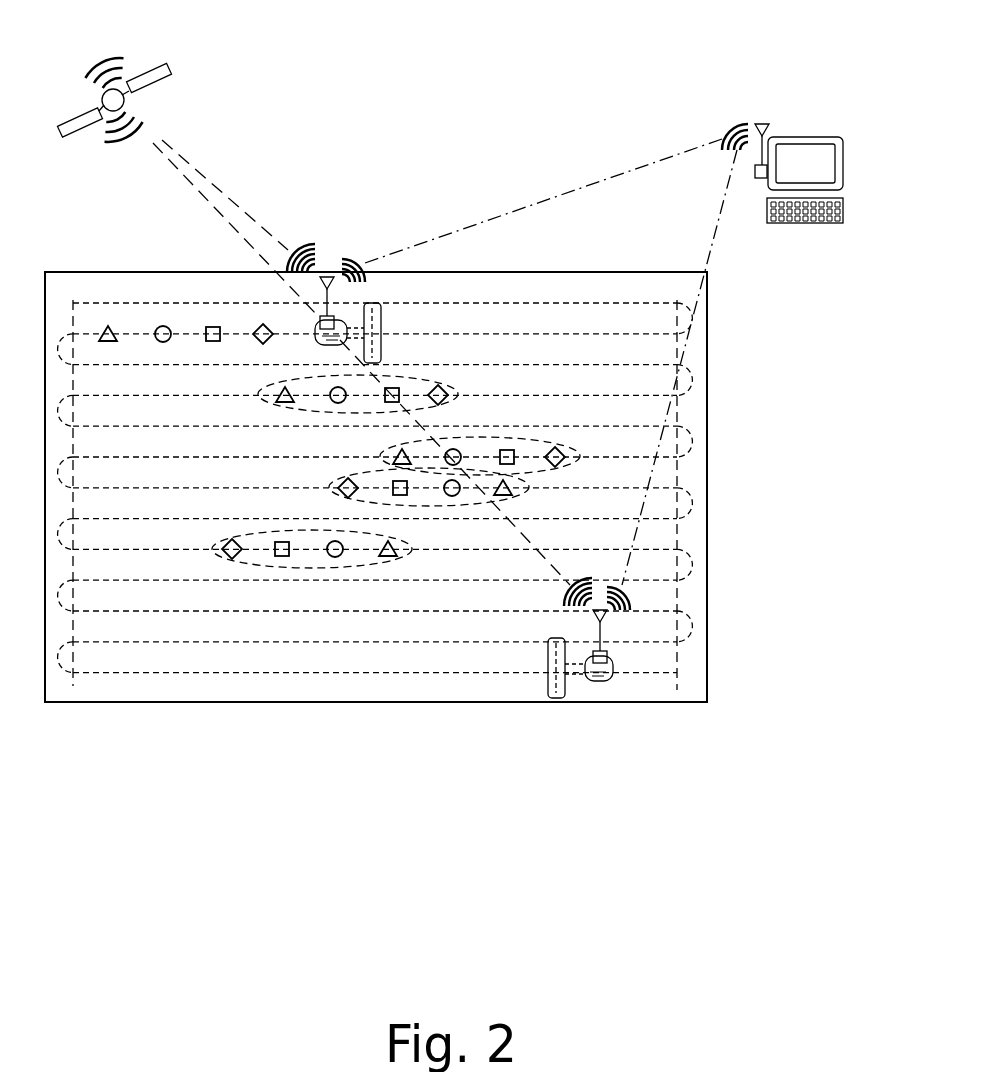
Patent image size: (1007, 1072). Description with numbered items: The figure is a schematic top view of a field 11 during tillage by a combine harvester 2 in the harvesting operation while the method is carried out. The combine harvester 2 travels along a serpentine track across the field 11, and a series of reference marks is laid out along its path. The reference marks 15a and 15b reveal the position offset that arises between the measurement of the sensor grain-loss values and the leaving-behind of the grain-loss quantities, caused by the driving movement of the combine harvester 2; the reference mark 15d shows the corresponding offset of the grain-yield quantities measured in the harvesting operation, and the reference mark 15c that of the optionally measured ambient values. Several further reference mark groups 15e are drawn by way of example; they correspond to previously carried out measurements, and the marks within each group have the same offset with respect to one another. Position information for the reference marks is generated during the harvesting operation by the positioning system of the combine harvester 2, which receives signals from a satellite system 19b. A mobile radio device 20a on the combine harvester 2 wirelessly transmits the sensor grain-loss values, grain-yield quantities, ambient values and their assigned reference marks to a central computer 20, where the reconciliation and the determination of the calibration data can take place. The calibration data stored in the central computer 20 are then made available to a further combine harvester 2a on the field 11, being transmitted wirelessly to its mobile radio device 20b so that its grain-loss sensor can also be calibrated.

The combine harvester 2 is at (377, 323).
The further combine harvester 2a is at (563, 700).
The field 11 is at (698, 347).
The reference mark 15a is at (163, 325).
The reference mark 15b is at (213, 325).
The reference mark 15c is at (263, 325).
The reference mark 15d is at (108, 325).
The reference mark groups 15e is at (412, 556).
The satellite system 19b is at (128, 105).
The central computer 20 is at (792, 150).
The mobile radio device 20a is at (326, 270).
The mobile radio device 20b is at (605, 620).